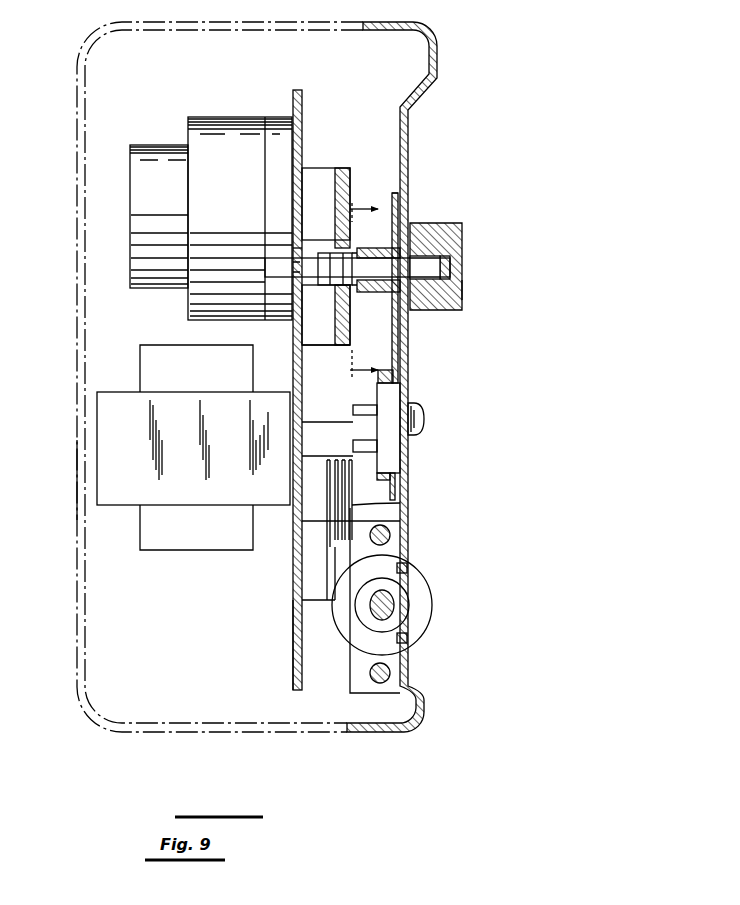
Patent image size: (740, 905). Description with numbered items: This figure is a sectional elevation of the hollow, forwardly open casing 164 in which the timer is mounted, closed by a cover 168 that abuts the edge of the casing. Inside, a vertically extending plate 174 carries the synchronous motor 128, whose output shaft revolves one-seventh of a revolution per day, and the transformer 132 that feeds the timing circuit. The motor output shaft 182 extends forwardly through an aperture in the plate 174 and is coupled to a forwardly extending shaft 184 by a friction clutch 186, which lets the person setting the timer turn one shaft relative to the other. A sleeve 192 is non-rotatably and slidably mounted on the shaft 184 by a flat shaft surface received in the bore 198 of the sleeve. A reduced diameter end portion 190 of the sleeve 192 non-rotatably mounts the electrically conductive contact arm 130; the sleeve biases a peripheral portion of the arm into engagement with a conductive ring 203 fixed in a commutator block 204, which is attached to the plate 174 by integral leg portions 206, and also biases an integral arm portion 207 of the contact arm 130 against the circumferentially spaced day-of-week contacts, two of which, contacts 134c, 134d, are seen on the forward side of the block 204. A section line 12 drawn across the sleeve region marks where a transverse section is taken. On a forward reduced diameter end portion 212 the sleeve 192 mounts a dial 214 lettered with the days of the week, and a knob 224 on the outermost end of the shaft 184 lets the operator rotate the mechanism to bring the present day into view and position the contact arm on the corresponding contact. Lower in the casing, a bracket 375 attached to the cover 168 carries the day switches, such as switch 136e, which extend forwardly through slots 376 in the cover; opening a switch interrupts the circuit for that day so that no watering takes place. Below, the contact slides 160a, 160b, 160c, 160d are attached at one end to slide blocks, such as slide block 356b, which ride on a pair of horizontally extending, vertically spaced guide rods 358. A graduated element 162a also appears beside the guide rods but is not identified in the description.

The cover 168 is at (408, 140).
The casing 164 is at (80, 487).
The integral leg portions 206 is at (310, 168).
The vertically extending plate 174 is at (293, 647).
The synchronous motor 128 is at (198, 294).
The transformer 132 is at (118, 410).
The forwardly extending shaft 184 is at (357, 267).
The motor output shaft 182 is at (319, 283).
The friction clutch 186 is at (300, 262).
The electrically conductive ring 203 is at (293, 248).
The contact 134c is at (338, 238).
The dial 214 is at (392, 205).
The contact arm 130 is at (358, 258).
The sleeve 192 is at (362, 292).
The reduced diameter end portion 190 is at (353, 293).
The contact 134d is at (340, 325).
The integral arm portion 207 is at (336, 330).
The commutator block 204 is at (345, 360).
The section line 12- 12 is at (364, 284).
The forward reduced diameter end portion 212 is at (400, 330).
The bore 198 is at (462, 237).
The knob 224 is at (462, 287).
The bracket 375 is at (395, 468).
The slots 376 is at (403, 448).
The switch 136e is at (424, 420).
The contact slide 160a is at (400, 503).
The contact slide 160b is at (400, 521).
The contact slide 160c is at (327, 545).
The contact slide 160d is at (335, 548).
The slide block 356b is at (356, 693).
The guide rods 358 is at (392, 538).
The dial 162a is at (432, 604).